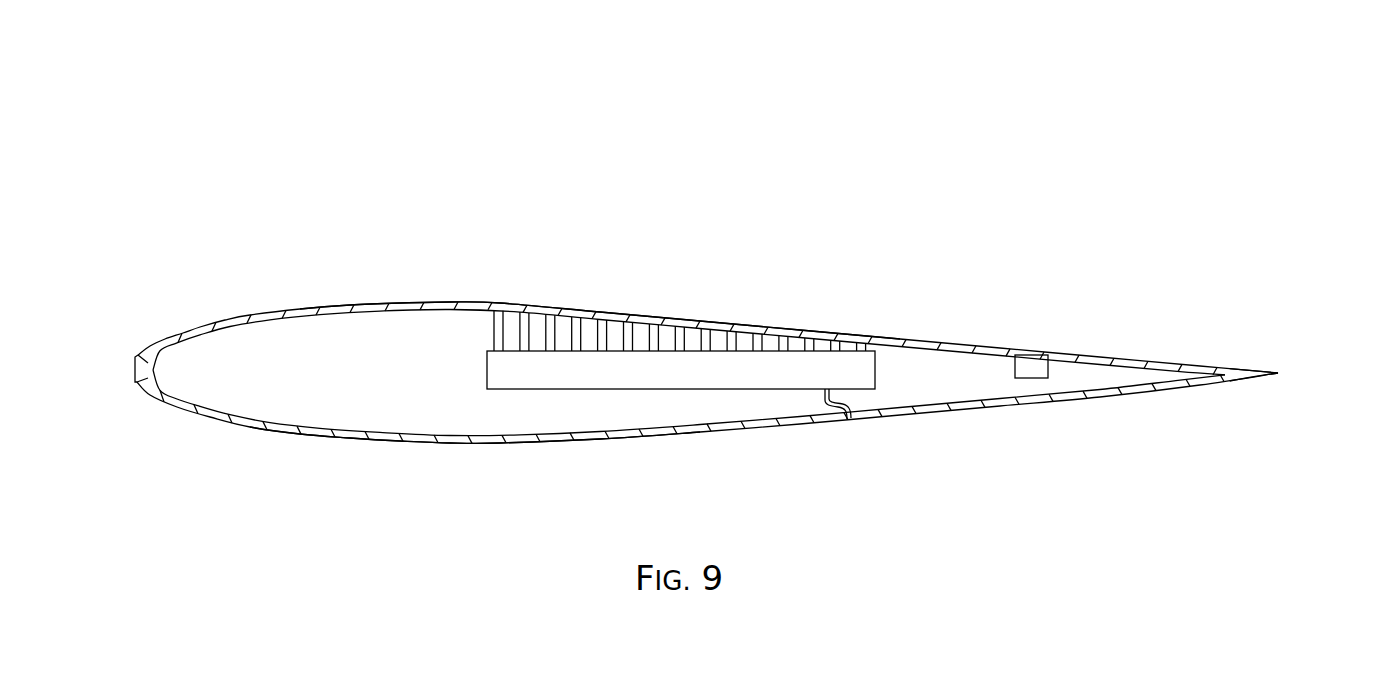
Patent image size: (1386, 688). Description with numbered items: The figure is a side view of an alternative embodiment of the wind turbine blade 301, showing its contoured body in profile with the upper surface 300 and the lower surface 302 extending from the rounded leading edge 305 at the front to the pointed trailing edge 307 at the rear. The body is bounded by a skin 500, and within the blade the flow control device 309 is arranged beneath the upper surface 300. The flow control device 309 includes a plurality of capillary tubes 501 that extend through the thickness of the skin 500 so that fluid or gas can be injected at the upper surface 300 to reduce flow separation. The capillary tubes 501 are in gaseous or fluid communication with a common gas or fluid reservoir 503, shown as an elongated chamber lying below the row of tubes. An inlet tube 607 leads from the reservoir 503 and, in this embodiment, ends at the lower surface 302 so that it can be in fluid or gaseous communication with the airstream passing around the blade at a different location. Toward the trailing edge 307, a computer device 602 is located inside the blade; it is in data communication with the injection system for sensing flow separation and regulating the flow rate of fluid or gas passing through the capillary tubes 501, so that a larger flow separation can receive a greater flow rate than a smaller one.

The upper surface 300 is at (1052, 322).
The wind turbine blade 301 is at (953, 125).
The lower surface 302 is at (302, 468).
The leading edge 305 is at (123, 372).
The trailing edge 307 is at (1290, 370).
The flow control device 309 is at (707, 295).
The skin 500 is at (967, 338).
The capillary tubes 501 is at (545, 307).
The gas or fluid reservoir 503 is at (683, 390).
The computer device 602 is at (1030, 378).
The inlet tube 607 is at (850, 422).